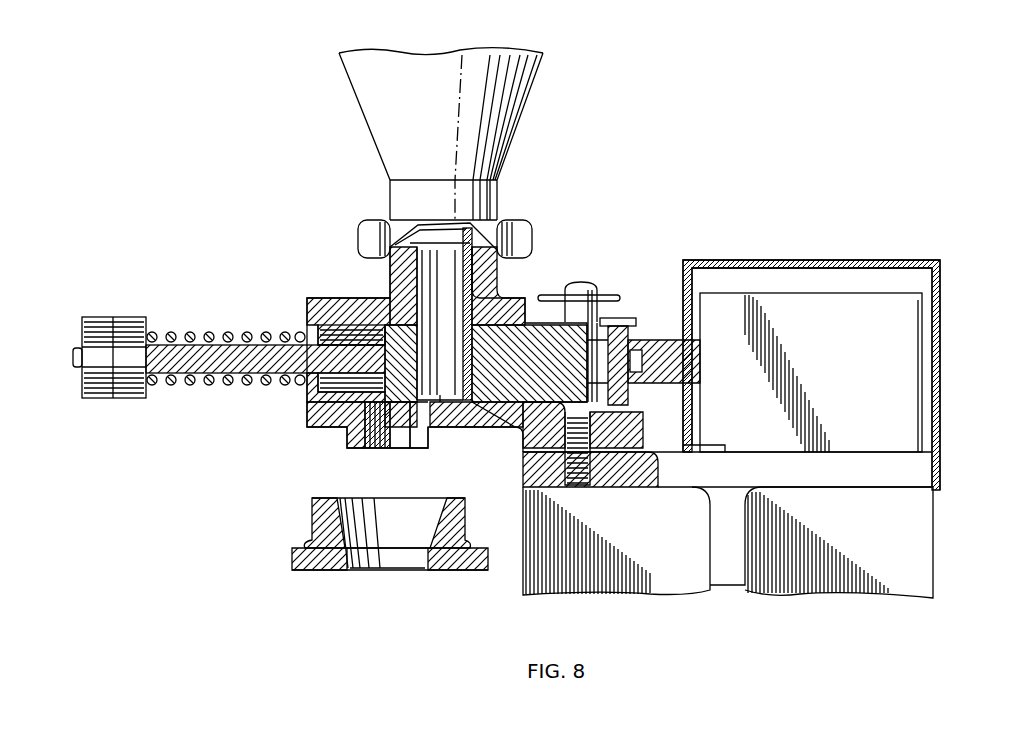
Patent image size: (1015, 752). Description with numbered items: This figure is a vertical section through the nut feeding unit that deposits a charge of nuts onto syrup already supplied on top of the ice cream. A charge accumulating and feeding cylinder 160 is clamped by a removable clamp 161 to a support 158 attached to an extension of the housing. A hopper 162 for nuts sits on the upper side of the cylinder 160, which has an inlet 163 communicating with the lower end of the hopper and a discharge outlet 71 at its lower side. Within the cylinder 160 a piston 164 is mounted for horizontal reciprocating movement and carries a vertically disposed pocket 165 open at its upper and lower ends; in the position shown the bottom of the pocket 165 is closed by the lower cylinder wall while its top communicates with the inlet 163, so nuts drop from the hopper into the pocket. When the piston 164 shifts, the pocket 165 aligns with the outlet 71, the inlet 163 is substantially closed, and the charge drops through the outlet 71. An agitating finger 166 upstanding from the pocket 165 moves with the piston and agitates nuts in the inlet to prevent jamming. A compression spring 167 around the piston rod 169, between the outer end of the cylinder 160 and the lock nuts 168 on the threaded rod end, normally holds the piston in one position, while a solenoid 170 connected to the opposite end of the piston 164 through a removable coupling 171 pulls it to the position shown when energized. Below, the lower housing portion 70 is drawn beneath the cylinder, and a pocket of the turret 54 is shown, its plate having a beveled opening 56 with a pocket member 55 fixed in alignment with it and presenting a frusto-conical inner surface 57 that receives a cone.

The hopper 162 is at (365, 100).
The agitating finger 166 is at (490, 238).
The inlet 163 is at (455, 288).
The charge accumulating and feeding cylinder 160 is at (348, 293).
The piston 164 is at (505, 392).
The pocket 165 is at (447, 388).
The discharge outlet 71 is at (397, 438).
The housing block 70 is at (300, 419).
The piston rod 169 is at (280, 343).
The lock nuts 168 is at (100, 323).
The compression spring 167 is at (207, 333).
The removable clamp 161 is at (572, 285).
The removable coupling 171 is at (625, 318).
The solenoid 170 is at (912, 338).
The support 158 is at (918, 472).
The turret 54 is at (447, 565).
The pocket member 55 is at (455, 520).
The beveled opening 56 is at (430, 553).
The inner surface 57 is at (335, 497).